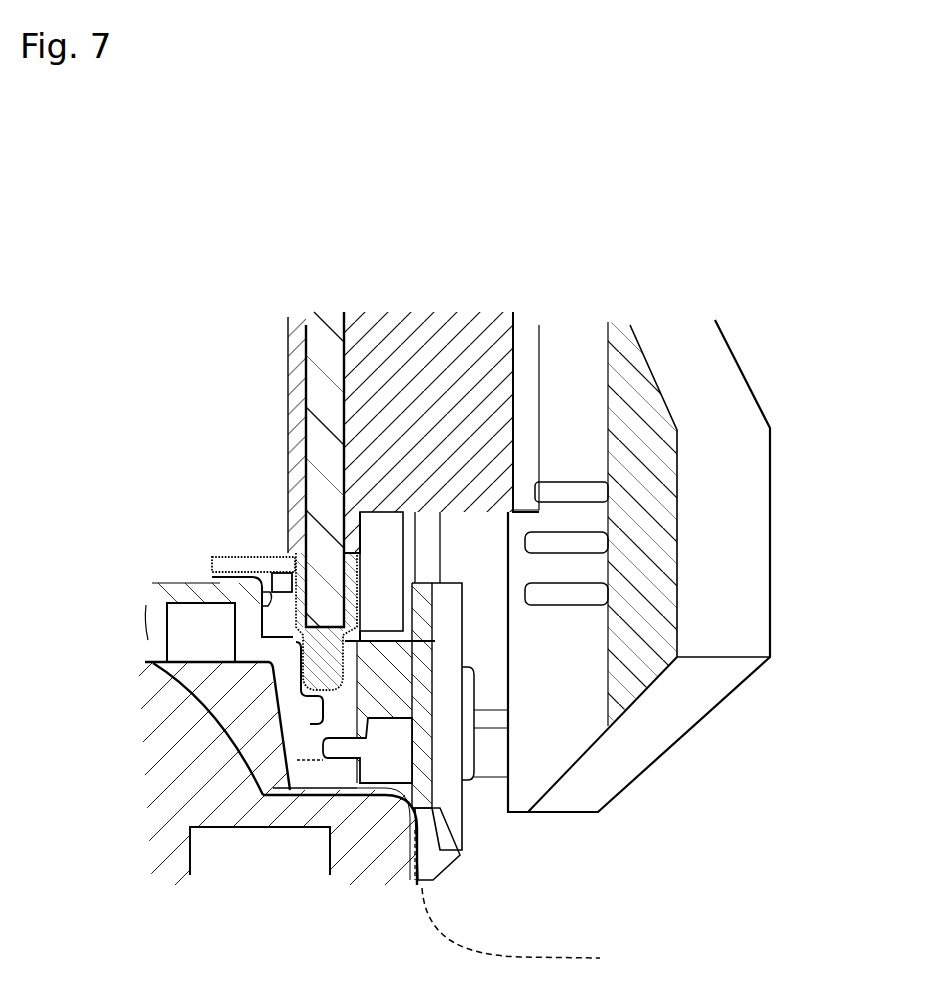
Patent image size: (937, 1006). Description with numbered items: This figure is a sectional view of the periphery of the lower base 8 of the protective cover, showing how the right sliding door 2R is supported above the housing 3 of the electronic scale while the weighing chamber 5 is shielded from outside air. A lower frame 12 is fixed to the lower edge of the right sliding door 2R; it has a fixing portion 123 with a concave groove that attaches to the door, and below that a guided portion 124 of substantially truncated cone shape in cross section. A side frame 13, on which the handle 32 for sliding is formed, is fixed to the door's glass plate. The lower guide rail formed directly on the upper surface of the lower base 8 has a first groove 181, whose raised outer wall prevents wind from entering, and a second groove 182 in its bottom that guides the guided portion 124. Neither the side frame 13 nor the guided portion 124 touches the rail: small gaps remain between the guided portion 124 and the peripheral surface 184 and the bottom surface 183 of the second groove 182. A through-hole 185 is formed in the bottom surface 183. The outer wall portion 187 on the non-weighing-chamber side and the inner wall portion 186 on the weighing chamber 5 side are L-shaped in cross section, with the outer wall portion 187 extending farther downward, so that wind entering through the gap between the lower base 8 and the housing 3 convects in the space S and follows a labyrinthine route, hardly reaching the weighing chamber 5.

The weighing chamber 5 is at (192, 483).
The right sliding door 2R is at (323, 377).
The lower frame 12 is at (360, 566).
The side frame 13 is at (380, 557).
The handle 32 is at (772, 558).
The first groove 181 is at (415, 602).
The second groove 182 is at (354, 667).
The through-hole 185 is at (436, 730).
The inner wall portion 186 is at (300, 703).
The peripheral surface 184 is at (300, 695).
The bottom surface 183 is at (325, 700).
The fixing portion 123 is at (300, 598).
The guided portion 124 is at (325, 662).
The housing 3 is at (383, 850).
The outer wall portion 187 is at (443, 812).
The lower base 8 is at (467, 667).
The space S is at (330, 780).